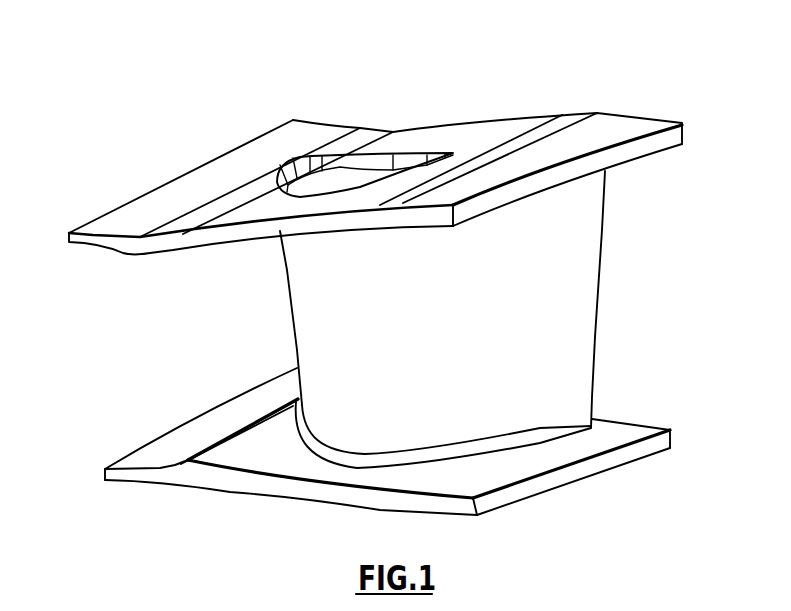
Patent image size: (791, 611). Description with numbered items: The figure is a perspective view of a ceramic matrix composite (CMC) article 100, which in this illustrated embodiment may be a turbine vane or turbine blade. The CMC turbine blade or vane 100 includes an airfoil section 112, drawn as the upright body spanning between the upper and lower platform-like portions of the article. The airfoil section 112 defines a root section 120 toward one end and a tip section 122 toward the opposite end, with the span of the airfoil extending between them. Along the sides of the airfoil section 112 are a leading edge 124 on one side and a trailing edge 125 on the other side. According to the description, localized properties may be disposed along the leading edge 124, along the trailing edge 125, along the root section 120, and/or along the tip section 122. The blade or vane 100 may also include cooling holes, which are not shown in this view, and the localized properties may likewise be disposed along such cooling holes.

The CMC article 100 is at (127, 76).
The airfoil section 112 is at (628, 274).
The root section 120 is at (543, 218).
The tip section 122 is at (540, 408).
The leading edge 124 is at (288, 292).
The trailing edge 125 is at (596, 337).